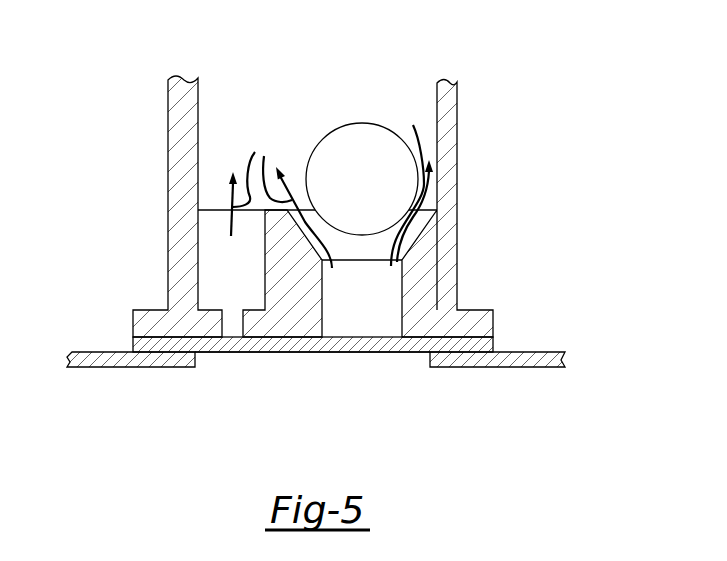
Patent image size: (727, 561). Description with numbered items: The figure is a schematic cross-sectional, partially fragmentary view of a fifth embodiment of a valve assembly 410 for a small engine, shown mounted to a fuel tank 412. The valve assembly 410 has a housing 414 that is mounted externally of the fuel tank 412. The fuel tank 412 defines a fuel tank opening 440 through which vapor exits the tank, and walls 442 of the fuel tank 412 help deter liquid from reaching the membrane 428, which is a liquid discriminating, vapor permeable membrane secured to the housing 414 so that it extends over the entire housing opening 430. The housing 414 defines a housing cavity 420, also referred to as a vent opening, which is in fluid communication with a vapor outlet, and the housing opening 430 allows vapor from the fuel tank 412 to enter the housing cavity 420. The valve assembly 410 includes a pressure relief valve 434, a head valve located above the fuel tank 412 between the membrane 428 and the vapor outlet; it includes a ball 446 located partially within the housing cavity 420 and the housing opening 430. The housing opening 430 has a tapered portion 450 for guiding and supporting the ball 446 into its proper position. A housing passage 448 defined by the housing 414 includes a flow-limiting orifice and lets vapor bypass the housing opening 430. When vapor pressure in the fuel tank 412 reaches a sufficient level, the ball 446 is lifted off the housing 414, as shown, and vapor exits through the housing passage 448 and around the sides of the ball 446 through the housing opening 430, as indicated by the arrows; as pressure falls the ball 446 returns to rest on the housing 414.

The valve assembly 410 is at (152, 218).
The fuel tank 412 is at (540, 357).
The housing 414 is at (477, 308).
The housing cavity 420 is at (330, 90).
The membrane 428 is at (207, 345).
The housing opening 430 is at (401, 298).
The pressure relief valve 434 is at (251, 88).
The fuel tank opening 440 is at (428, 358).
The walls 442 is at (497, 369).
The ball 446 is at (373, 124).
The housing passage 448 is at (202, 224).
The tapered portion 450 is at (412, 242).